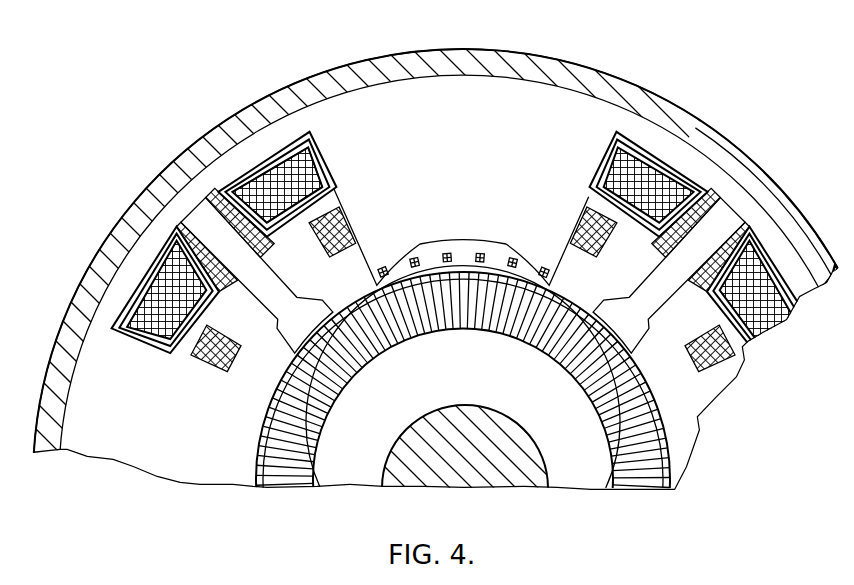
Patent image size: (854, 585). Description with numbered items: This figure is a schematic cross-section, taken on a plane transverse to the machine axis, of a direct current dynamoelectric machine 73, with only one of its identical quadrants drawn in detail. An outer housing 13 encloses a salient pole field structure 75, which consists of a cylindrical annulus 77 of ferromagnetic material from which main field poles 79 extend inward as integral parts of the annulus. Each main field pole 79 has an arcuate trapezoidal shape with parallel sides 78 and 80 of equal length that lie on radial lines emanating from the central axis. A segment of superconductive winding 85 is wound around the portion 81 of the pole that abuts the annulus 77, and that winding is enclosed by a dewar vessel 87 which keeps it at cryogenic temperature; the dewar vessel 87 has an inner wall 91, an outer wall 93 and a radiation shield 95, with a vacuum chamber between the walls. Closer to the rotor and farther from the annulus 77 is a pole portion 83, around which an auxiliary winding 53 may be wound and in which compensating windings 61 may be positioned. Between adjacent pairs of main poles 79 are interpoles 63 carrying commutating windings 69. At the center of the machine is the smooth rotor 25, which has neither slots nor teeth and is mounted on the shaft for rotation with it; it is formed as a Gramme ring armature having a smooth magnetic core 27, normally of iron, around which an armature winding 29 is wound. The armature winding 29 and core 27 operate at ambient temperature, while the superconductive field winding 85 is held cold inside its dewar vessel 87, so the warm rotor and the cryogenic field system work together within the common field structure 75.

The direct current dynamoelectric machine 73 is at (109, 169).
The salient pole field structure 75 is at (509, 67).
The housing 13 is at (666, 48).
The cylindrical annulus 77 is at (677, 151).
The outer wall 93 is at (232, 173).
The radiation shield 95 is at (267, 160).
The dewar vessel 87 is at (311, 133).
The inner wall 91 is at (288, 182).
The superconductive winding 85 is at (297, 188).
The commutating windings 69 is at (176, 229).
The side 78 is at (340, 211).
The auxiliary winding 53 is at (602, 232).
The interpoles 63 is at (694, 346).
The main field poles 79 is at (365, 268).
The side 80 is at (565, 250).
The portion of field pole 83 is at (504, 233).
The portion of main field pole 81 is at (392, 147).
The compensating windings 61 is at (484, 252).
The smooth rotor 25 is at (478, 330).
The smooth magnetic core 27 is at (594, 393).
The armature winding 29 is at (337, 357).